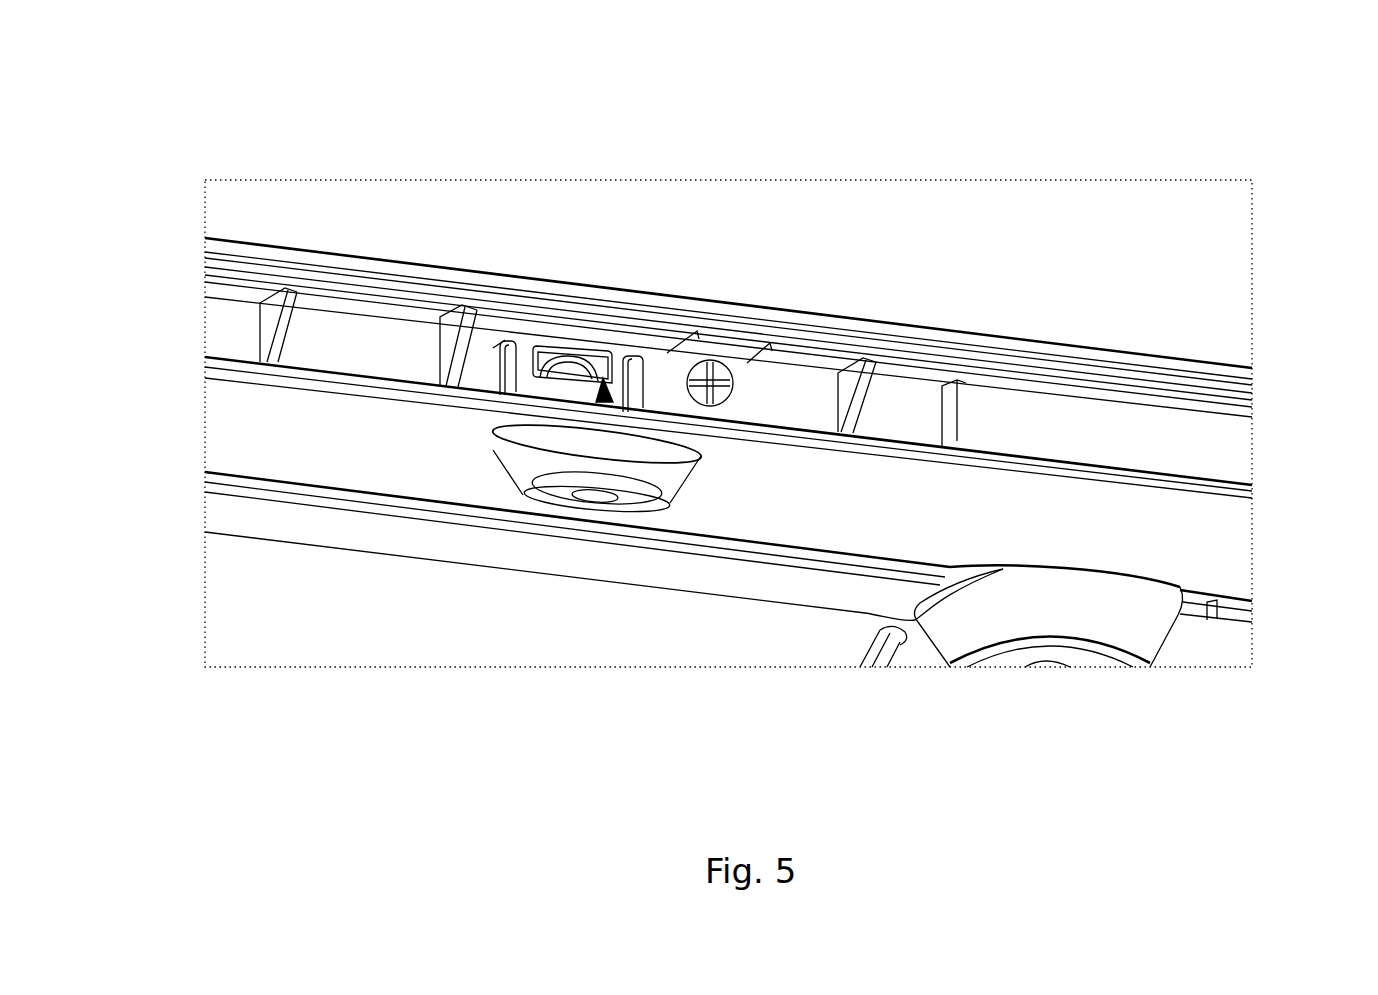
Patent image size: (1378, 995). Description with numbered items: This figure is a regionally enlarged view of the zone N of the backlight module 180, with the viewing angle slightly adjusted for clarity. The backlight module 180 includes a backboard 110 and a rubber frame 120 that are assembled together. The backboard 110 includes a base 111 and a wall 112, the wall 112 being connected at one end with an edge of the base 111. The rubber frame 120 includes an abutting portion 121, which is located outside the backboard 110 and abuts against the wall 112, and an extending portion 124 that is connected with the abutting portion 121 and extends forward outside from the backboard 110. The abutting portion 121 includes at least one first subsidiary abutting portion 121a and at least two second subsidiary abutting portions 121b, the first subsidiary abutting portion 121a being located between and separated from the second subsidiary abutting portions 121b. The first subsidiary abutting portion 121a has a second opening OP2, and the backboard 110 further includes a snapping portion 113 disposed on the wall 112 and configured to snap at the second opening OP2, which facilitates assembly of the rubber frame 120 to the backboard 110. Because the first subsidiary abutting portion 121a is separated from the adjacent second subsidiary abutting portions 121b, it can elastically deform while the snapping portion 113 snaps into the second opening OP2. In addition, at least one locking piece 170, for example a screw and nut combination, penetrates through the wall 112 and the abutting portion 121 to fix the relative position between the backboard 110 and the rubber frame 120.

The zone N is at (190, 103).
The backboard 110 is at (134, 372).
The base 111 is at (237, 443).
The wall 112 is at (505, 362).
The snapping portion 113 is at (560, 377).
The rubber frame 120 is at (815, 60).
The abutting portion 121 is at (730, 110).
The first subsidiary abutting portion 121a is at (622, 358).
The second subsidiary abutting portion 121b is at (493, 352).
The extending portion 124 is at (795, 362).
The locking piece 170 is at (720, 405).
The backlight module 180 is at (1336, 33).
The second opening OP2 is at (606, 402).